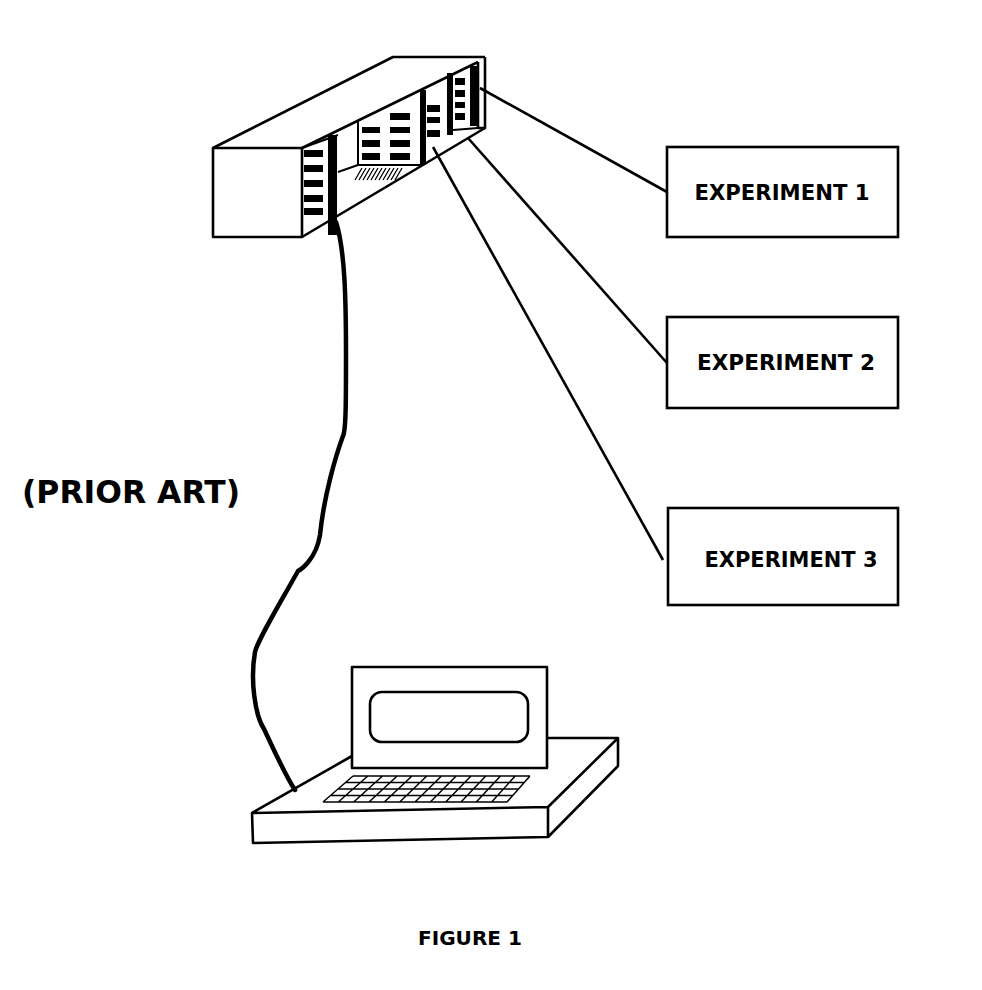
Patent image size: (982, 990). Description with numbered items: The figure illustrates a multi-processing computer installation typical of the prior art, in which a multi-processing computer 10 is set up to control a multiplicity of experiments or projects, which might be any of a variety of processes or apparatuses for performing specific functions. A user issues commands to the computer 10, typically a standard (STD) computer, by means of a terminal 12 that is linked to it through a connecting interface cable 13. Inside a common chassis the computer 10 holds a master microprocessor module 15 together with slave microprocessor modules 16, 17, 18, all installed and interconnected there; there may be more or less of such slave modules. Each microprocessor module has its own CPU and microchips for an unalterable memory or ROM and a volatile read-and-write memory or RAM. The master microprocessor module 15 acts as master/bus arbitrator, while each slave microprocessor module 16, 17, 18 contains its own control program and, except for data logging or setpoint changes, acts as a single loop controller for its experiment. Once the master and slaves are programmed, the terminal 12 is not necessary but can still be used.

The multi-processing computer 10 is at (310, 93).
The terminal 12 is at (558, 698).
The connecting interface cable 13 is at (352, 524).
The master microprocessor module 15 is at (347, 187).
The slave microprocessor module 16 is at (480, 86).
The slave microprocessor module 17 is at (470, 135).
The slave microprocessor module 18 is at (413, 157).